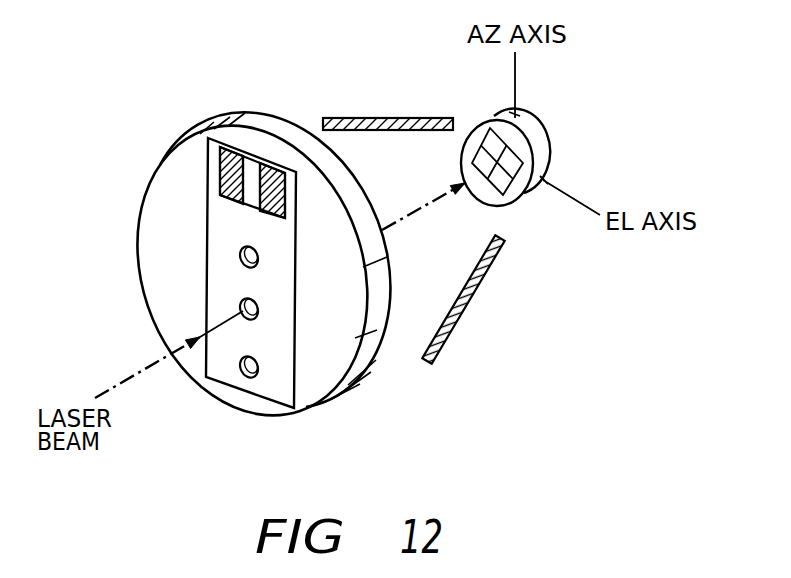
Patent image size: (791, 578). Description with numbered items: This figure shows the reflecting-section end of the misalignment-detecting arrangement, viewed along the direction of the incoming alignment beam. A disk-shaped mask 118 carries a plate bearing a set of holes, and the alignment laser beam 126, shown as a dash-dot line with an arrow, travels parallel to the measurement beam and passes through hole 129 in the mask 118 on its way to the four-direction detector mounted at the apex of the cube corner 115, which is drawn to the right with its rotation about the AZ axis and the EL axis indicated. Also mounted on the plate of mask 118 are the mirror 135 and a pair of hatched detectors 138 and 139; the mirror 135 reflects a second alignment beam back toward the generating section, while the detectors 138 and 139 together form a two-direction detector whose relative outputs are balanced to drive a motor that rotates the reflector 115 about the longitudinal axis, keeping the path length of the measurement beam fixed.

The cube corner 115 is at (382, 118).
The mask 118 is at (243, 392).
The beam 126 is at (114, 387).
The hole 129 is at (258, 314).
The mirror 135 is at (250, 200).
The detector 138 is at (220, 172).
The detector 139 is at (283, 198).